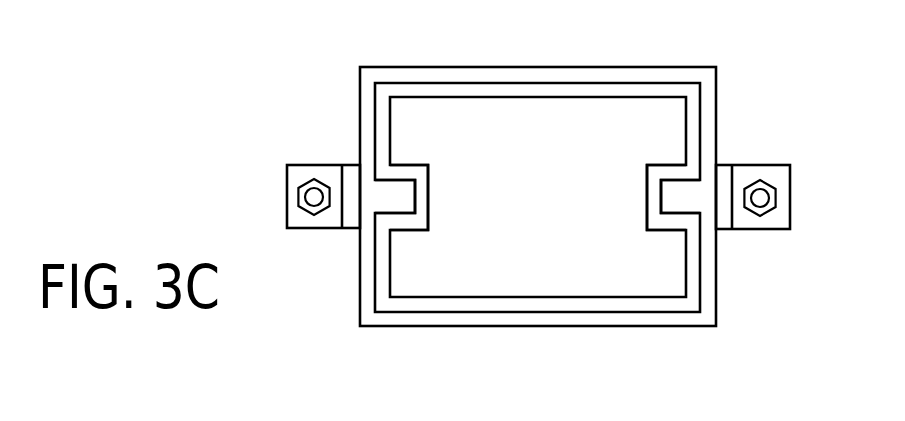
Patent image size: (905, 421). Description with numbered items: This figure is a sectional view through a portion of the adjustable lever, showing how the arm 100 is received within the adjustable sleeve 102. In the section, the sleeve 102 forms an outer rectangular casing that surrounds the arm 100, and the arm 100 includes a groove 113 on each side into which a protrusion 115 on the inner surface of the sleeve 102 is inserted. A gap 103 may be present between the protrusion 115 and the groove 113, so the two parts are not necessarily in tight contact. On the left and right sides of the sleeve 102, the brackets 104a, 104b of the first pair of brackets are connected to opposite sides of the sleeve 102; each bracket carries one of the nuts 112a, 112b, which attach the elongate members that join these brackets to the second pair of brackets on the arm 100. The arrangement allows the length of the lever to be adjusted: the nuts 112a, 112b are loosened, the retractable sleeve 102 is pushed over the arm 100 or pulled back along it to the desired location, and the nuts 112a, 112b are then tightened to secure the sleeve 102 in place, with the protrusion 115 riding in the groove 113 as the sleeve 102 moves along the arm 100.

The arm 100 is at (547, 228).
The adjustable sleeve 102 is at (544, 67).
The gap 103 is at (383, 107).
The bracket 104a is at (348, 222).
The bracket 104b is at (724, 222).
The nut 112a is at (323, 176).
The nut 112b is at (750, 179).
The groove 113 is at (432, 187).
The protrusion 115 is at (392, 200).